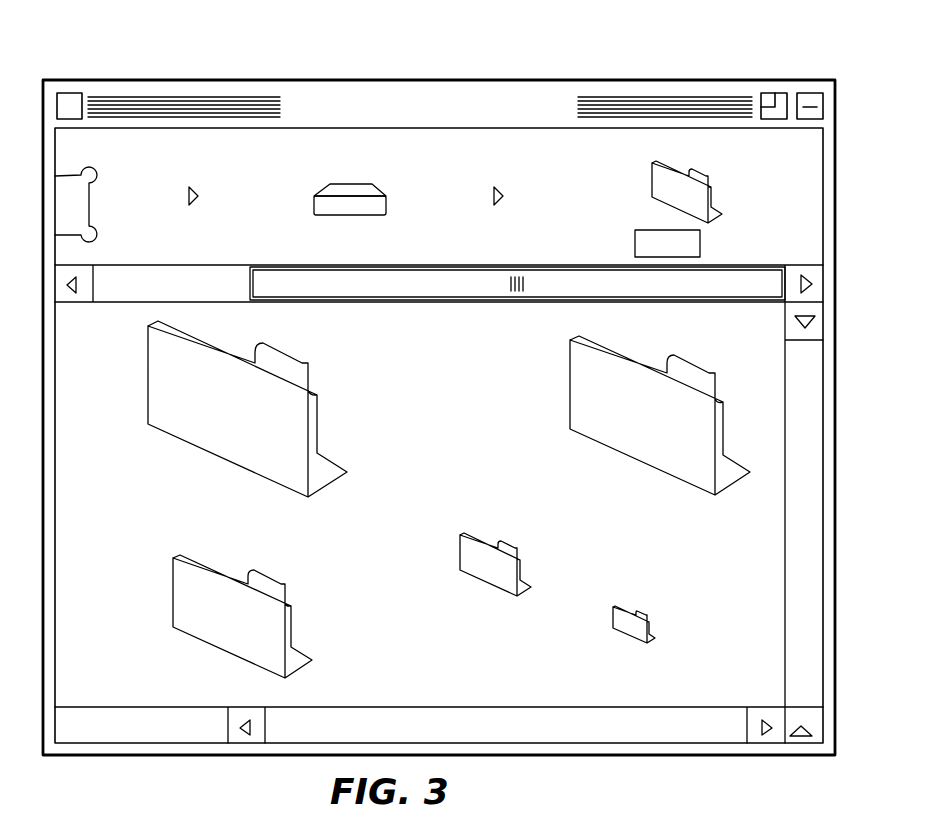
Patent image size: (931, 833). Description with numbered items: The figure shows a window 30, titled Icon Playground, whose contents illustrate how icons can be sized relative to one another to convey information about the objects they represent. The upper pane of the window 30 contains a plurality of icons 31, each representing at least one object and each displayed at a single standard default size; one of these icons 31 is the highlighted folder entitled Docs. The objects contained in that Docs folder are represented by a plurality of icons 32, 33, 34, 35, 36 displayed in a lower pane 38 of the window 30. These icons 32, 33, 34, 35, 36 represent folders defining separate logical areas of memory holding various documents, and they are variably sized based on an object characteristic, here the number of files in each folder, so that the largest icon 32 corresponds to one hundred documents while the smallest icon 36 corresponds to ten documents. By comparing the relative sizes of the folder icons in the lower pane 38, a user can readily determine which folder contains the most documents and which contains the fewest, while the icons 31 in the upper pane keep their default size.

The window 30 is at (439, 390).
The icons 31 is at (98, 167).
The icon 32 is at (289, 352).
The icon 33 is at (570, 383).
The icon 34 is at (262, 572).
The icon 35 is at (459, 540).
The icon 36 is at (648, 613).
The lower pane 38 is at (712, 303).